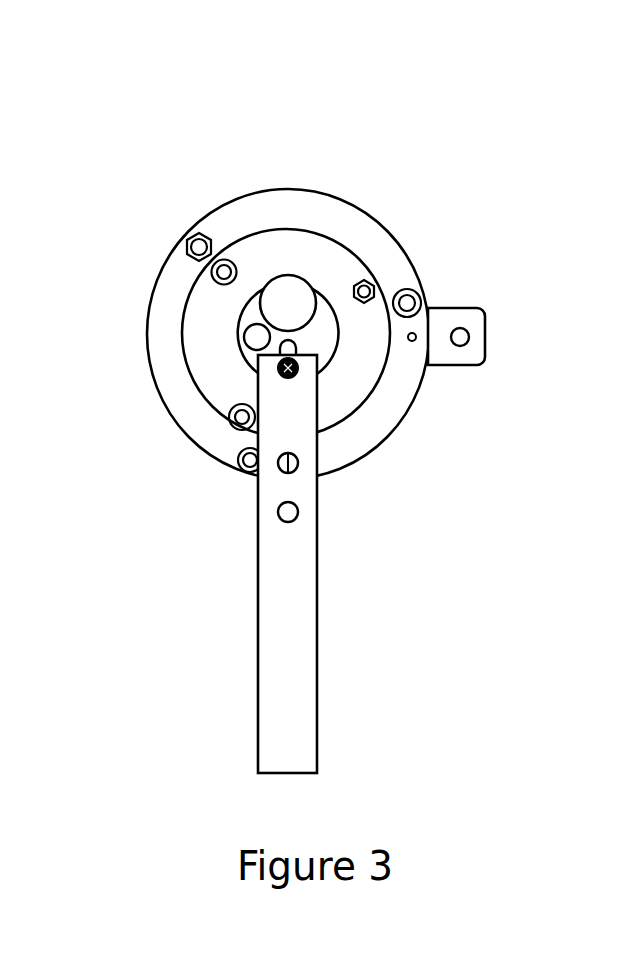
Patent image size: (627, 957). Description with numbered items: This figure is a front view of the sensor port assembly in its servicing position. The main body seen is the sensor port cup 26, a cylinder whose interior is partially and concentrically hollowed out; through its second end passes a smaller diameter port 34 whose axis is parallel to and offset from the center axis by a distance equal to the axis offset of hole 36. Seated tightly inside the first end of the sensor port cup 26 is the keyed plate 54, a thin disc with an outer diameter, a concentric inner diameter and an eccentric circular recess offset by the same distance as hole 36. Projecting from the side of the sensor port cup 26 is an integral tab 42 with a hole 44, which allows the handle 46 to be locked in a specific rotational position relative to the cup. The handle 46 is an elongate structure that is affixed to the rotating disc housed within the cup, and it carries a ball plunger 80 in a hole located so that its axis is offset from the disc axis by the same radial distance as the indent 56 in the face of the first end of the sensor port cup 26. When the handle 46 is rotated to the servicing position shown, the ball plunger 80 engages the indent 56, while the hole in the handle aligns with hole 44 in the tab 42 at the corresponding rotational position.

The sensor port cup 26 is at (289, 205).
The hole 36 is at (291, 297).
The port 34 is at (262, 337).
The keyed plate 54 is at (357, 370).
The indent 56 is at (413, 334).
The hole 44 is at (463, 333).
The tab 42 is at (492, 358).
The handle 46 is at (302, 690).
The ball plunger 80 is at (292, 466).